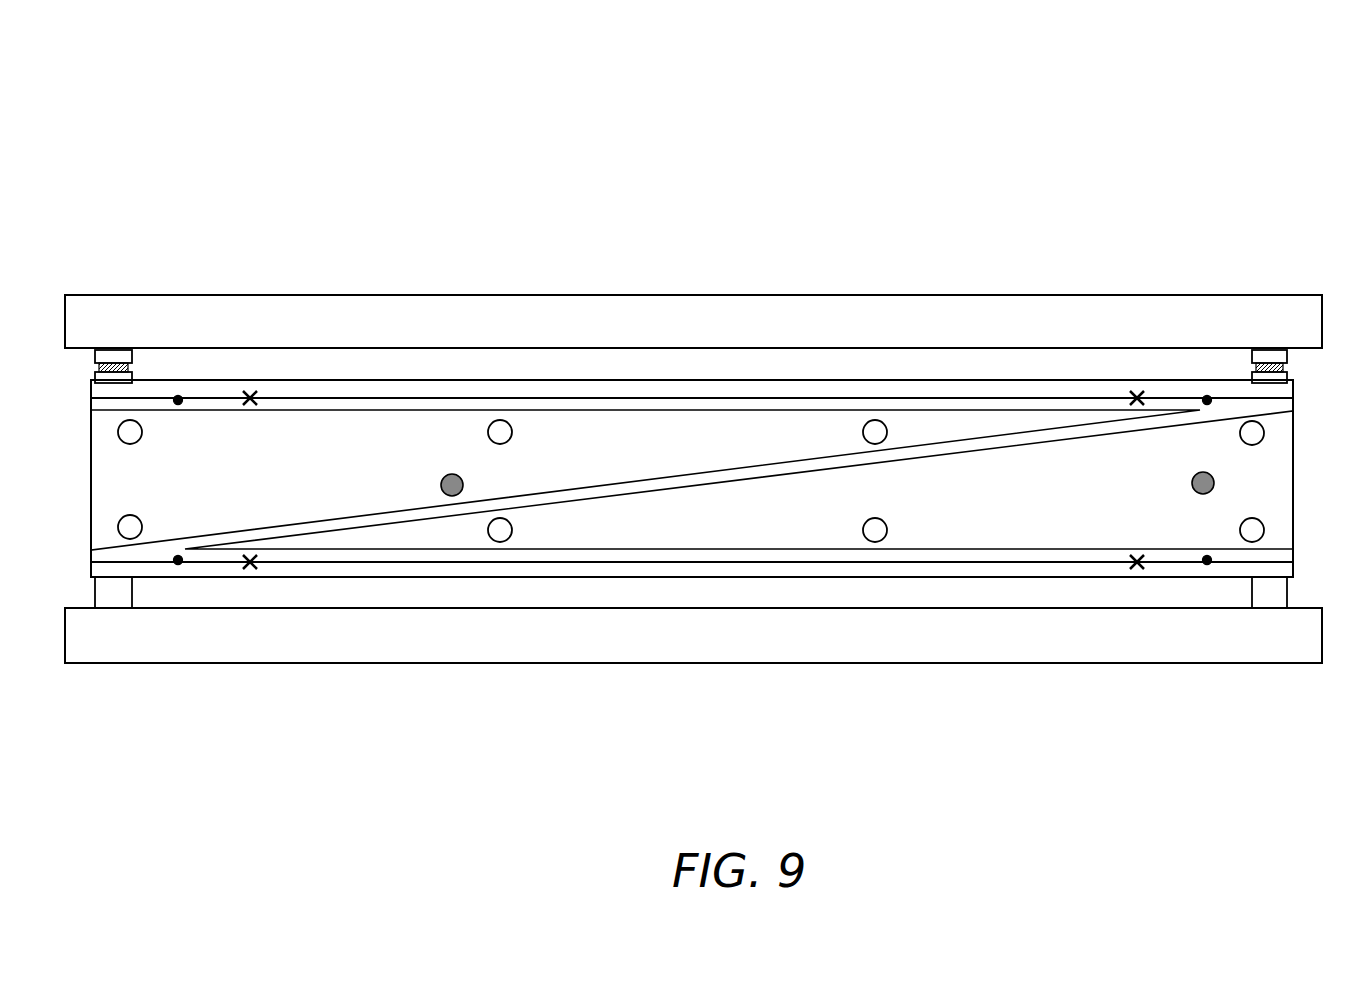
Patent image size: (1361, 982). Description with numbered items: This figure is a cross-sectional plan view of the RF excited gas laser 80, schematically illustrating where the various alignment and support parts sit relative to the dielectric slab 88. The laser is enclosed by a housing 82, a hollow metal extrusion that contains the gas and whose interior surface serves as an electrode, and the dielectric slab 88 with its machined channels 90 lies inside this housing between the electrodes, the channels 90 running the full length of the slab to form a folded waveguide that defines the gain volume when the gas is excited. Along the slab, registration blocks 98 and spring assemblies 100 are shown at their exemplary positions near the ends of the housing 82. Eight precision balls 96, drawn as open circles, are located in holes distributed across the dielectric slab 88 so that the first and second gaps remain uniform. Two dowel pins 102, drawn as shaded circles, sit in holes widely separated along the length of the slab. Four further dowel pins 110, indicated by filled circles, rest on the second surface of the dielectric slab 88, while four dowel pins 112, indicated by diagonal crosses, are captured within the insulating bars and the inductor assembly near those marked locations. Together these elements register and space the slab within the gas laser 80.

The RF excited gas laser 80 is at (1203, 130).
The housing 82 is at (916, 303).
The dielectric slab 88 is at (693, 533).
The channels 90 is at (872, 555).
The precision balls 96 is at (866, 424).
The registration blocks 98 is at (122, 600).
The spring assemblies 100 is at (103, 355).
The dowel pins 102 is at (441, 494).
The dowel pins 110 is at (182, 397).
The dowel pins 112 is at (1135, 392).